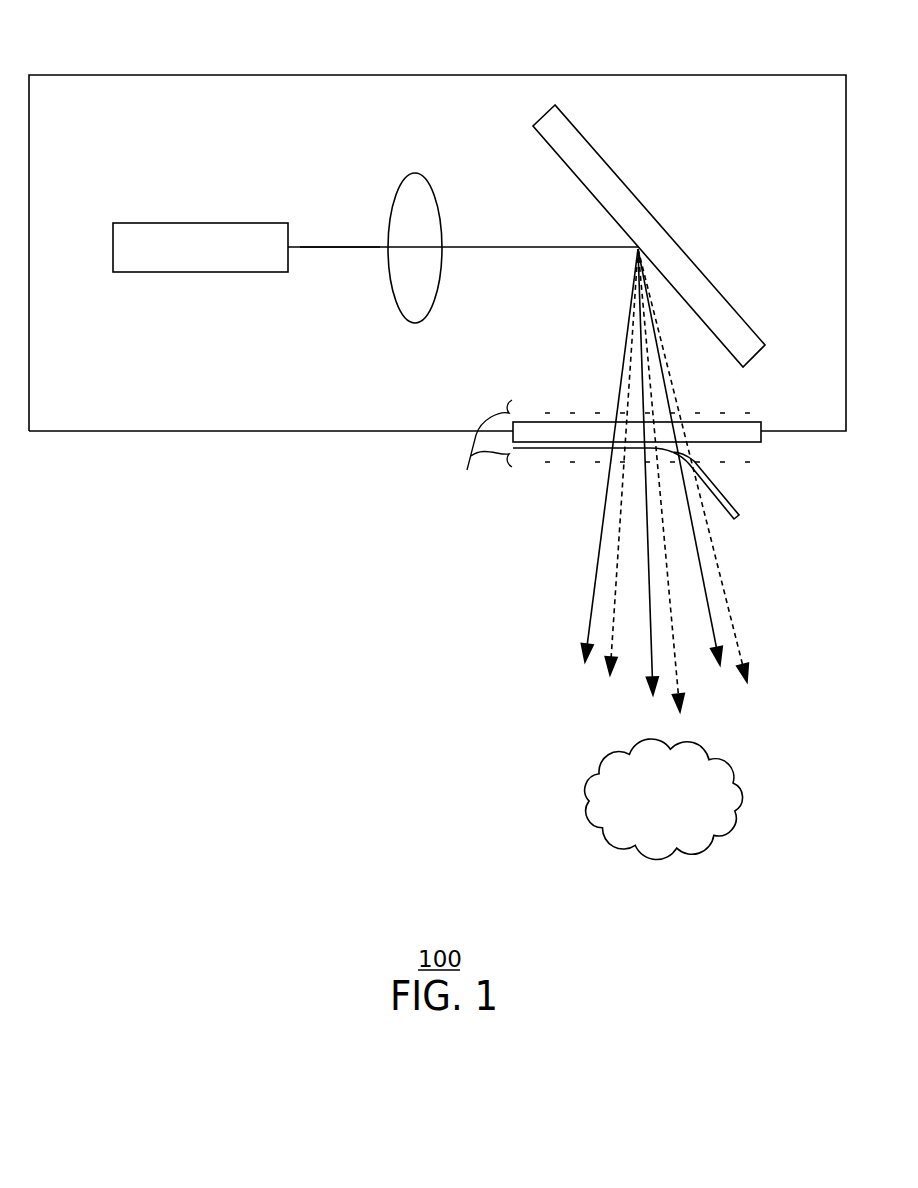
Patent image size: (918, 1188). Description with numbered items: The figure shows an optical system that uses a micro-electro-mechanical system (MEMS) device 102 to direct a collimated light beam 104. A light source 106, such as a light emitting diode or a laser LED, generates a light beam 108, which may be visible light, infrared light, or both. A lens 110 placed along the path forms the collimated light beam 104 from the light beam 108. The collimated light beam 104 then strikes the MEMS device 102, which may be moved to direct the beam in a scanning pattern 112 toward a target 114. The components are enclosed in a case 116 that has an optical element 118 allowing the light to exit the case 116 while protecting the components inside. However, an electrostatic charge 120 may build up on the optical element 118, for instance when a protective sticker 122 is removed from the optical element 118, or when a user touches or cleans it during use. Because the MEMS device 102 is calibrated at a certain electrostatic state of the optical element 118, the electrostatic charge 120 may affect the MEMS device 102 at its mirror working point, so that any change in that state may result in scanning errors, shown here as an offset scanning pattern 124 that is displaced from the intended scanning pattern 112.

The micro-electro-mechanical system (MEMS) device 102 is at (588, 140).
The collimated light beam 104 is at (535, 248).
The light source 106 is at (183, 222).
The light beam 108 is at (341, 246).
The lens 110 is at (409, 173).
The scanning pattern 112 is at (700, 572).
The target 114 is at (610, 747).
The case 116 is at (131, 75).
The optical element 118 is at (757, 422).
The electrostatic charge 120 is at (476, 449).
The protective sticker 122 is at (735, 508).
The offset scanning pattern 124 is at (612, 647).